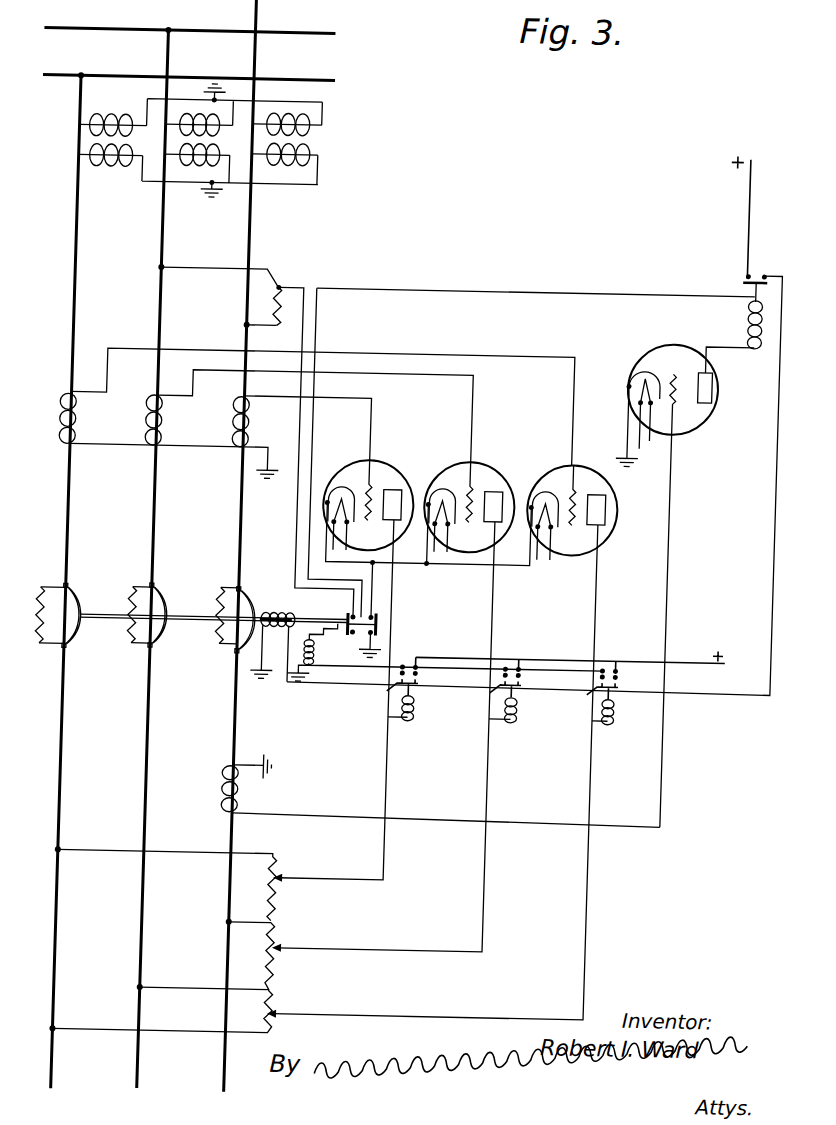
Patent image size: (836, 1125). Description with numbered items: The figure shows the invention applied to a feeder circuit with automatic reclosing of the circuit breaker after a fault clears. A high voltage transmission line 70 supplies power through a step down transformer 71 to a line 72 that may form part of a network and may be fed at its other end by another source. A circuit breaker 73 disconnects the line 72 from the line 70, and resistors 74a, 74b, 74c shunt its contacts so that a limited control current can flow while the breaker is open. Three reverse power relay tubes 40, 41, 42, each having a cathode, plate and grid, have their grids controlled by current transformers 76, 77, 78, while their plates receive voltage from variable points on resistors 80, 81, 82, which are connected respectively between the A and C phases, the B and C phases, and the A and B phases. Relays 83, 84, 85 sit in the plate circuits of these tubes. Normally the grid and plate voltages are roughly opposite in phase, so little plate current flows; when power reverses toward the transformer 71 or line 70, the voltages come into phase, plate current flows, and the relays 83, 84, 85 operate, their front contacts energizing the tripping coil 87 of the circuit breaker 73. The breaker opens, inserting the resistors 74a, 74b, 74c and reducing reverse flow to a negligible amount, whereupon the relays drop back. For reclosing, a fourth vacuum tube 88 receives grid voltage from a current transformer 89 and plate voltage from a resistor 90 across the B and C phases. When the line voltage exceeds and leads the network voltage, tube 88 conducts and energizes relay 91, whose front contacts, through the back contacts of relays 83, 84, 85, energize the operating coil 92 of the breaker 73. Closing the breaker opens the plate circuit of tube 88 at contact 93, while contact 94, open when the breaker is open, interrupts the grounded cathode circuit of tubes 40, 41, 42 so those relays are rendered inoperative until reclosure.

The high voltage transmission line 70 is at (336, 31).
The step down transformer 71 is at (327, 156).
The line 72 is at (67, 815).
The circuit breaker 73 is at (198, 618).
The resistor 74a is at (24, 606).
The resistor 74b is at (114, 611).
The resistor 74c is at (218, 596).
The current transformer 76 is at (241, 441).
The current transformer 77 is at (154, 437).
The current transformer 78 is at (64, 435).
The resistor 80 is at (290, 895).
The resistor 81 is at (293, 936).
The resistor 82 is at (296, 999).
The relay 83 is at (416, 718).
The relay 84 is at (516, 717).
The relay 85 is at (610, 716).
The tripping coil 87 is at (321, 654).
The fourth vacuum tube 88 is at (696, 419).
The current transformer 89 is at (229, 803).
The resistor 90 is at (274, 290).
The relay 91 is at (736, 319).
The operating coil 92 is at (273, 617).
The contact 93 is at (355, 616).
The contact 94 is at (380, 613).
The reverse power relay tube 40 is at (385, 469).
The reverse power relay tube 41 is at (486, 467).
The reverse power relay tube 42 is at (573, 469).